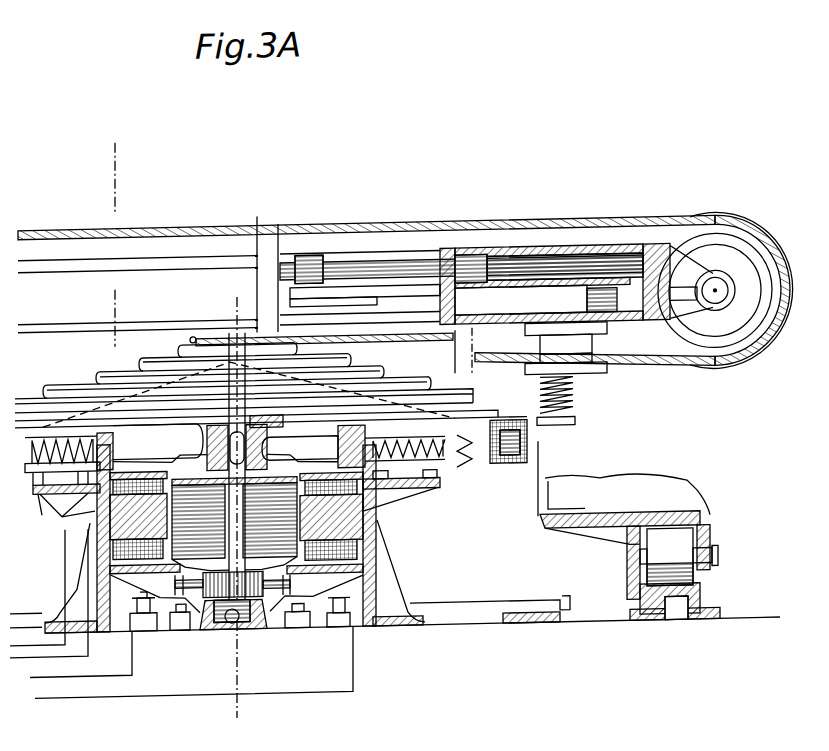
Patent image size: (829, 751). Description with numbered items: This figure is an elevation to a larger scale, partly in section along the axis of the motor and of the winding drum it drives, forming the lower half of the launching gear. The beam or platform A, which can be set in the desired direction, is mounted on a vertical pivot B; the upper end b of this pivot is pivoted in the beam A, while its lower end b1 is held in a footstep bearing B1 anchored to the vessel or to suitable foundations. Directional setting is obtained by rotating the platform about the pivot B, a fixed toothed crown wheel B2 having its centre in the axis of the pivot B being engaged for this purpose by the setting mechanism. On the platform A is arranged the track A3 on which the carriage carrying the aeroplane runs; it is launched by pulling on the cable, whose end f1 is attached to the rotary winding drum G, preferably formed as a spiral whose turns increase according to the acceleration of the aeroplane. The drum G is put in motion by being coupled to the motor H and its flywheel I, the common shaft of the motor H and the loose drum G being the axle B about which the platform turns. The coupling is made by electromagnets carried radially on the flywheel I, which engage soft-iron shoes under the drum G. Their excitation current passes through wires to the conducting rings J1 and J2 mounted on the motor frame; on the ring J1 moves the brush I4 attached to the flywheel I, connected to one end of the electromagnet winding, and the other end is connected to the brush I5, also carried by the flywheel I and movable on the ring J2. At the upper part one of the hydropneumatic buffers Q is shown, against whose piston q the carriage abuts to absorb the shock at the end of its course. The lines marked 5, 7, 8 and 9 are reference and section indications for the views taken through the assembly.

The section line 5 is at (123, 247).
The section line 7 is at (267, 260).
The beam or platform A is at (23, 307).
The track A3 is at (176, 283).
The upper end of pivot b is at (227, 331).
The axis line 9 is at (226, 510).
The end of cable f1 is at (190, 339).
The piston q is at (340, 271).
The hydropneumatic buffer Q is at (518, 307).
The winding drum G is at (335, 397).
The section line 8 is at (548, 448).
The flywheel I is at (197, 453).
The motor H is at (262, 496).
The brush I5 is at (35, 465).
The brush I4 is at (52, 493).
The conducting ring J1 is at (388, 492).
The conducting ring J2 is at (435, 492).
The vertical pivot B is at (385, 584).
The lower end of pivot b1 is at (238, 612).
The footstep bearing B1 is at (258, 630).
The fixed toothed crown wheel B2 is at (527, 622).